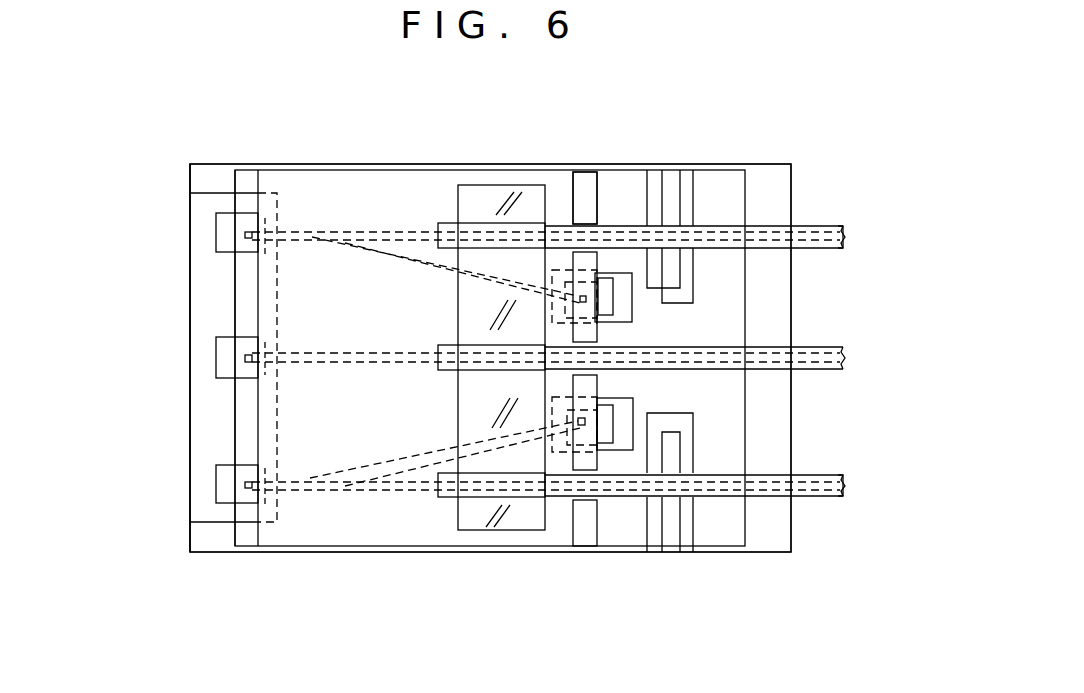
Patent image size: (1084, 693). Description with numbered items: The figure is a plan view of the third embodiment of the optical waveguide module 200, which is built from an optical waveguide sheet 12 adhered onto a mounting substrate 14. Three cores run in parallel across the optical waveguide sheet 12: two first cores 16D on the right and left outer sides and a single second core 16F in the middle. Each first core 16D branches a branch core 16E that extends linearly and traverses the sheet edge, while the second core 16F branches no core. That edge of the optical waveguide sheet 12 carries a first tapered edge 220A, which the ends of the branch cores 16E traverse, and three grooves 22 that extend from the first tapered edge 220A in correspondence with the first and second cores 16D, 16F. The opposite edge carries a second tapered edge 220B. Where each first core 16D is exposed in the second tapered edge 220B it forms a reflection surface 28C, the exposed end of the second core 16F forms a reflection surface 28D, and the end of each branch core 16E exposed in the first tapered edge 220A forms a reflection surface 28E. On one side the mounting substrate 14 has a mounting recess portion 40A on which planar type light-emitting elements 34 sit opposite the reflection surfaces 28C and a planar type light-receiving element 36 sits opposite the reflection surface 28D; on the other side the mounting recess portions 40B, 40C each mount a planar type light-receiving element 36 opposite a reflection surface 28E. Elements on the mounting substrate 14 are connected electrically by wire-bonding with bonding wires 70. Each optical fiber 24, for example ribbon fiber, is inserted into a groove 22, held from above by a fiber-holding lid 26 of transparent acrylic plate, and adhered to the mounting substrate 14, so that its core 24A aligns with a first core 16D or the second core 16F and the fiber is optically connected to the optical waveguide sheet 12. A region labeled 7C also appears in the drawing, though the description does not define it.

The optical waveguide module 200 is at (213, 560).
The optical waveguide sheet 12 is at (308, 180).
The mounting substrate 14 is at (770, 521).
The side region 7C is at (195, 343).
The first core 16D is at (387, 228).
The branch core 16E is at (410, 243).
The second core 16F is at (307, 357).
The groove 22 is at (593, 220).
The first tapered edge 220A is at (583, 172).
The second tapered edge 220B is at (250, 185).
The optical fiber 24 is at (800, 228).
The core of the optical fiber 24A is at (835, 238).
The fiber-holding lid 26 is at (506, 517).
The reflection surface 28C is at (245, 236).
The reflection surface 28D is at (243, 362).
The reflection surface 28E is at (585, 297).
The planar type light-emitting element 34 is at (216, 213).
The planar type light-receiving element 36 is at (216, 337).
The mounting recess portion 40A is at (210, 279).
The mounting recess portion 40B is at (651, 300).
The mounting recess portion 40C is at (635, 447).
The bonding wire 70 is at (223, 232).